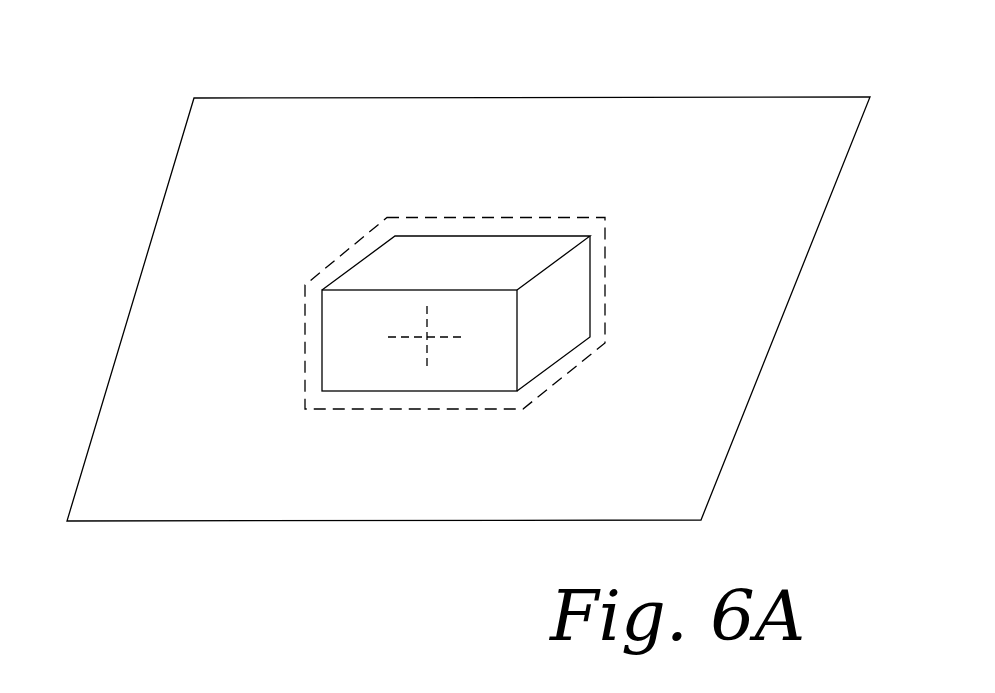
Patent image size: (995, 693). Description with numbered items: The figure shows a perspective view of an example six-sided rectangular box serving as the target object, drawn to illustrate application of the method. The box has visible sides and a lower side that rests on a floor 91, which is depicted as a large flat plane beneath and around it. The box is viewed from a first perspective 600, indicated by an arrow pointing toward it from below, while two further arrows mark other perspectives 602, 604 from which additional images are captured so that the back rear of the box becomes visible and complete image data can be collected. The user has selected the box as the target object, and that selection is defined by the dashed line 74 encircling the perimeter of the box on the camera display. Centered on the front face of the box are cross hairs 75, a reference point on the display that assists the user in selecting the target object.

The floor 91 is at (704, 296).
The dashed line 74 is at (473, 218).
The cross hairs 75 is at (423, 352).
The first perspective 600 is at (473, 445).
The other perspective 602 is at (653, 195).
The other perspective 604 is at (297, 251).